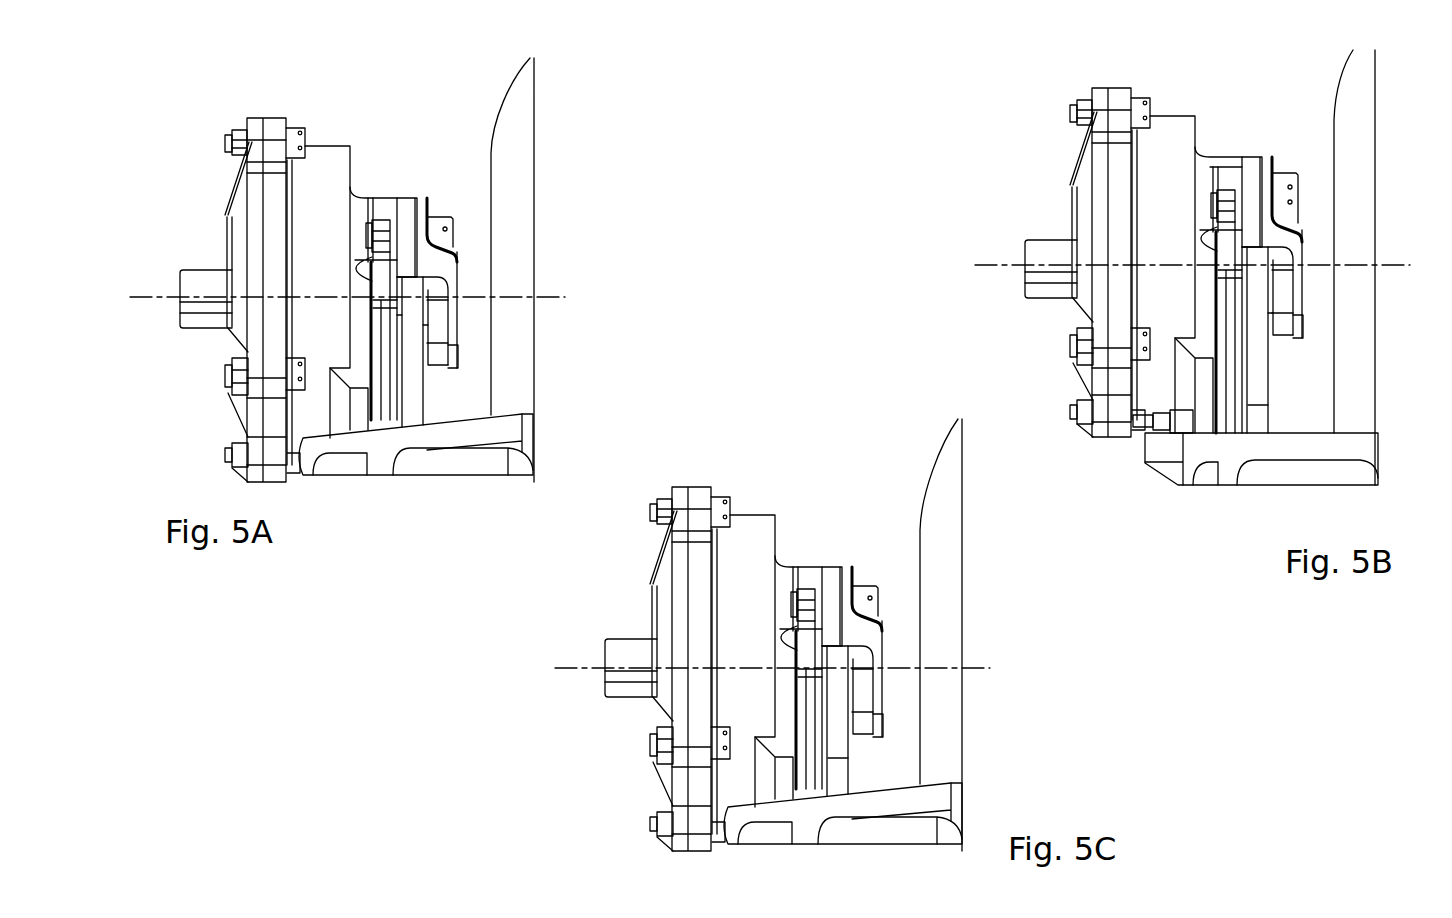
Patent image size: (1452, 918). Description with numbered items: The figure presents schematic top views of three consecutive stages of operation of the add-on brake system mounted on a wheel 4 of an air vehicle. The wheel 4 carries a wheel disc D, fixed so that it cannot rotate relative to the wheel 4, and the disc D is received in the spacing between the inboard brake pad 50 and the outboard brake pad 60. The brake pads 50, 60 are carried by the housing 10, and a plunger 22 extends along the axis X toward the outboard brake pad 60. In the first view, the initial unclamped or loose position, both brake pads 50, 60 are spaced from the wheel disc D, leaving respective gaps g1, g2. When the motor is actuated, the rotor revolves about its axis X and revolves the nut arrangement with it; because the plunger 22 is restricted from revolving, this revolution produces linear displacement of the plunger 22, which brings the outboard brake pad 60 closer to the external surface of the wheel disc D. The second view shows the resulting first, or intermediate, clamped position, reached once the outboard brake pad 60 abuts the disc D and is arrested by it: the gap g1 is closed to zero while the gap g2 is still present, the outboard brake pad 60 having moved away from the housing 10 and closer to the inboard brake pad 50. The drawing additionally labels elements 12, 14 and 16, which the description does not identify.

In FIG. 5A, the housing 10 is at (263, 98).
In FIG. 5B, the housing 10 is at (1178, 289).
In FIG. 5C, the housing 10 is at (805, 662).
In FIG. 5A, the mounting plate 12 is at (275, 202).
In FIG. 5B, the mounting plate 12 is at (1087, 262).
In FIG. 5C, the mounting plate 12 is at (656, 669).
In FIG. 5A, the housing 14 is at (328, 168).
In FIG. 5B, the housing 14 is at (1196, 244).
In FIG. 5C, the housing 14 is at (790, 631).
In FIG. 5A, the shaft 16 is at (202, 320).
In FIG. 5B, the shaft 16 is at (1031, 295).
In FIG. 5C, the shaft 16 is at (611, 698).
In FIG. 5A, the plunger 22 is at (411, 312).
In FIG. 5B, the plunger 22 is at (1256, 269).
In FIG. 5C, the plunger 22 is at (836, 649).
In FIG. 5A, the inboard brake pad assembly 50 is at (472, 364).
In FIG. 5B, the inboard brake pad assembly 50 is at (1288, 299).
In FIG. 5C, the inboard brake pad assembly 50 is at (949, 716).
In FIG. 5A, the outboard brake pad assembly 60 is at (391, 384).
In FIG. 5B, the outboard brake pad assembly 60 is at (1255, 374).
In FIG. 5C, the outboard brake pad assembly 60 is at (843, 752).
In FIG. 5A, the wheel 4 is at (515, 142).
In FIG. 5B, the wheel 4 is at (1384, 267).
In FIG. 5C, the wheel 4 is at (971, 635).
In FIG. 5A, the axis X is at (560, 300).
In FIG. 5B, the axis X is at (1209, 241).
In FIG. 5C, the axis X is at (789, 647).
In FIG. 5B, the wheel disc D is at (1274, 466).
In FIG. 5C, the wheel disc D is at (862, 816).
In FIG. 5A, the gap g1 is at (403, 315).
In FIG. 5A, the gap g2 is at (425, 325).
In FIG. 5B, the gap g2 is at (1348, 331).